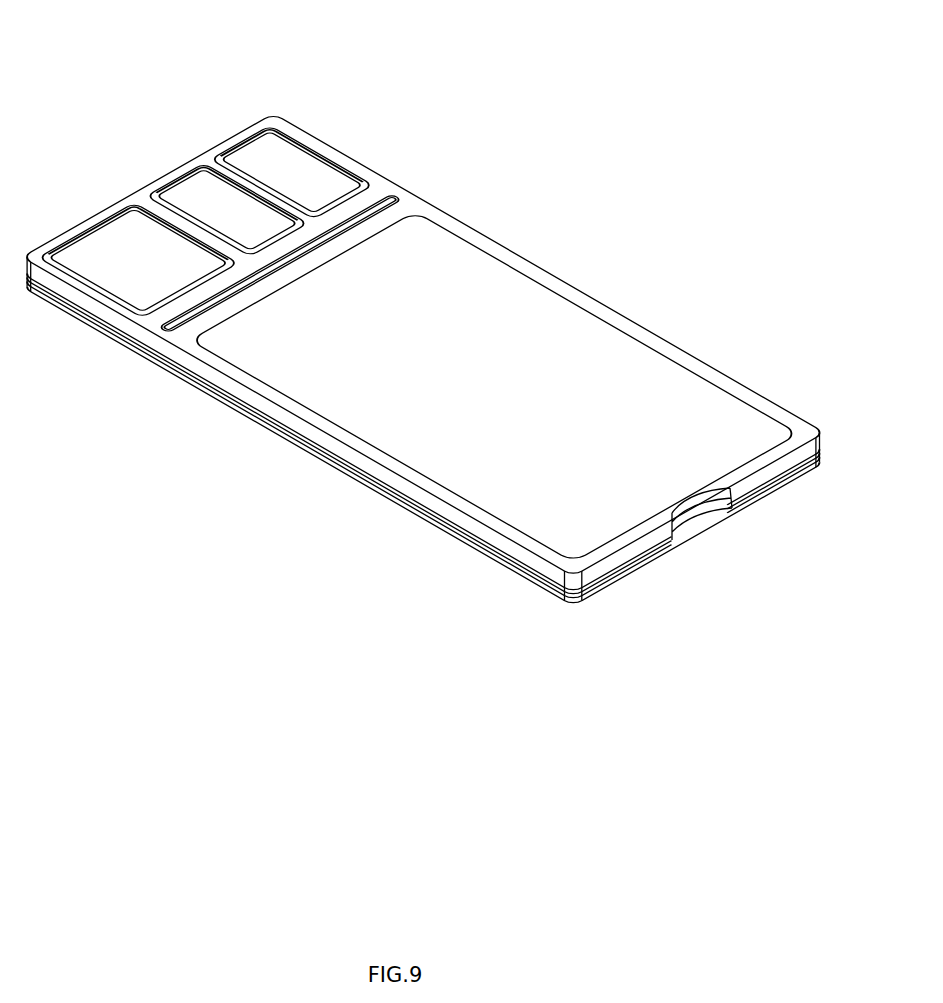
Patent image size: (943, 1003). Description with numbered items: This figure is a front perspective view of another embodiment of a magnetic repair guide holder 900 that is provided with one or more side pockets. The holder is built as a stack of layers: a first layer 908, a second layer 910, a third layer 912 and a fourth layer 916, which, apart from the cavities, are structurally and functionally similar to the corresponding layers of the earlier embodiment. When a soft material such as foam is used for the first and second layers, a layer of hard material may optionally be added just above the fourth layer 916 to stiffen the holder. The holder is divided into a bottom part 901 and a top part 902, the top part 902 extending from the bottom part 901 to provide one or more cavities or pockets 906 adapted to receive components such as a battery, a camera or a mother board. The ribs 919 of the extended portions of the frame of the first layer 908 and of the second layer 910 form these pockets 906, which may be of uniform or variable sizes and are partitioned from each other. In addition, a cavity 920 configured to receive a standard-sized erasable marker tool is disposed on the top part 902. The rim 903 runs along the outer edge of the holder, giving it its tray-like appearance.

The magnetic repair guide holder 900 is at (562, 70).
The bottom part 901 is at (568, 282).
The top part 902 is at (312, 130).
The rim 903 is at (220, 145).
The pockets 906 is at (182, 200).
The first layer 908 is at (193, 360).
The second layer 910 is at (265, 410).
The third layer 912 is at (305, 442).
The fourth layer 916 is at (353, 473).
The ribs 919 is at (167, 215).
The cavity 920 is at (384, 194).